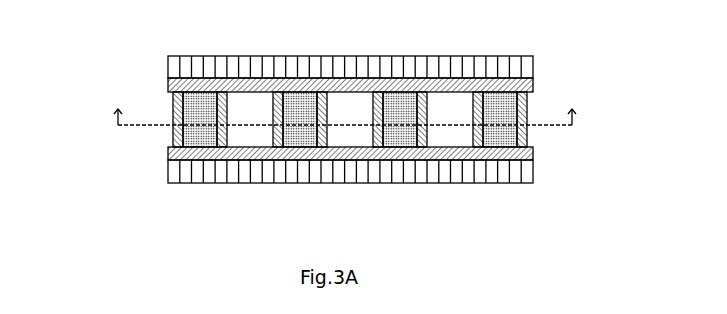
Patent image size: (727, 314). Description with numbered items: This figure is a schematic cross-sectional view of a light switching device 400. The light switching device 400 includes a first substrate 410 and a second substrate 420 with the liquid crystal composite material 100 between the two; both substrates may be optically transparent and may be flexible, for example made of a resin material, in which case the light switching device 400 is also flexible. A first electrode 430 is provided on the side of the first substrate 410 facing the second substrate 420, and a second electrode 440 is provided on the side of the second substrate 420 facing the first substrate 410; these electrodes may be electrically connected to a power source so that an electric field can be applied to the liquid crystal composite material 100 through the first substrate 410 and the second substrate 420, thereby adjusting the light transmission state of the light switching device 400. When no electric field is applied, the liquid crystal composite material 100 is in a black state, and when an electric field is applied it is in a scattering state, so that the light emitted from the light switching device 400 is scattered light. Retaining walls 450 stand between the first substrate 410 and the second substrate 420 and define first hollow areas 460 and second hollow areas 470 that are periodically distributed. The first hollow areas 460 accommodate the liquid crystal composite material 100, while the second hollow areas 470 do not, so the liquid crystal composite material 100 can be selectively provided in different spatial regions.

The light switching device 400 is at (102, 35).
The first substrate 410 is at (168, 71).
The second substrate 420 is at (168, 172).
The first electrode 430 is at (518, 85).
The second electrode 440 is at (515, 152).
The liquid crystal composite material 100 is at (193, 136).
The retaining walls 450 is at (225, 133).
The first hollow areas 460 is at (318, 137).
The second hollow areas 470 is at (377, 130).